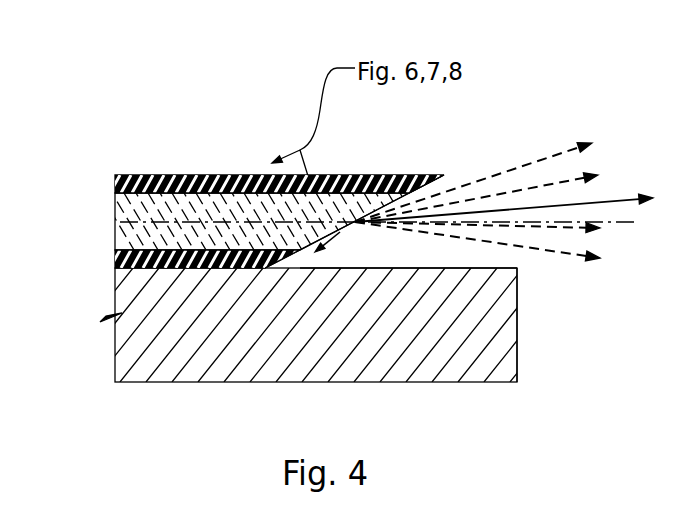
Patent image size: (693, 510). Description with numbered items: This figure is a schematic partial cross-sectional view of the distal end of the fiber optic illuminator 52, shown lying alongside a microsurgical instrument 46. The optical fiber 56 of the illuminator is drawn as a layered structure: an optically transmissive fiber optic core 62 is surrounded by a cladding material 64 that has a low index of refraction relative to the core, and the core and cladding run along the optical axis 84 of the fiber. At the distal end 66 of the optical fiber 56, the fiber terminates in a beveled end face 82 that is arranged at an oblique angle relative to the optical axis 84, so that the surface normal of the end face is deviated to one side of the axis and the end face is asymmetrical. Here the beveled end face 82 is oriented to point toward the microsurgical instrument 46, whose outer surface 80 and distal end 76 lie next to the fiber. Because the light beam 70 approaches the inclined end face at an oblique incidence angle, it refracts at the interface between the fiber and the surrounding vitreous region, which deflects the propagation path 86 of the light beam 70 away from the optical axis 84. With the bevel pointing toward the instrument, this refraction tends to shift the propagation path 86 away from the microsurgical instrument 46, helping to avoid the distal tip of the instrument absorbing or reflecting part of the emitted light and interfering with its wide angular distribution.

The microsurgical instrument 46 is at (193, 382).
The fiber optic illuminator 52 is at (342, 238).
The optical fiber 56 is at (262, 175).
The fiber optic core 62 is at (183, 210).
The cladding material 64 is at (143, 190).
The distal end 66 is at (418, 175).
The light beam 70 is at (518, 163).
The distal end 76 is at (517, 340).
The outer surface 80 is at (397, 268).
The beveled end face 82 is at (300, 248).
The optical axis 84 is at (128, 225).
The propagation path 86 is at (610, 197).